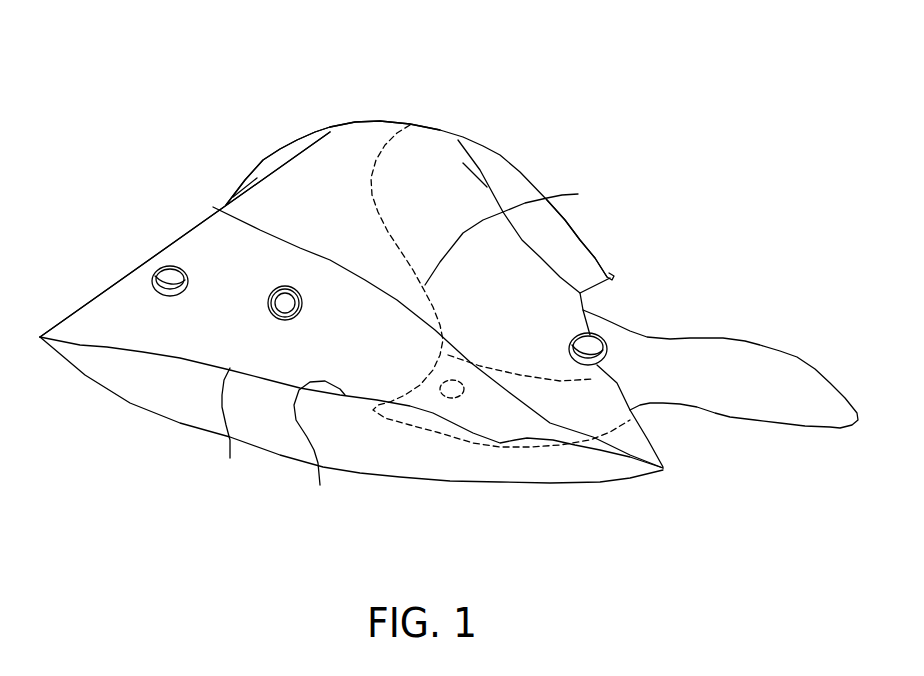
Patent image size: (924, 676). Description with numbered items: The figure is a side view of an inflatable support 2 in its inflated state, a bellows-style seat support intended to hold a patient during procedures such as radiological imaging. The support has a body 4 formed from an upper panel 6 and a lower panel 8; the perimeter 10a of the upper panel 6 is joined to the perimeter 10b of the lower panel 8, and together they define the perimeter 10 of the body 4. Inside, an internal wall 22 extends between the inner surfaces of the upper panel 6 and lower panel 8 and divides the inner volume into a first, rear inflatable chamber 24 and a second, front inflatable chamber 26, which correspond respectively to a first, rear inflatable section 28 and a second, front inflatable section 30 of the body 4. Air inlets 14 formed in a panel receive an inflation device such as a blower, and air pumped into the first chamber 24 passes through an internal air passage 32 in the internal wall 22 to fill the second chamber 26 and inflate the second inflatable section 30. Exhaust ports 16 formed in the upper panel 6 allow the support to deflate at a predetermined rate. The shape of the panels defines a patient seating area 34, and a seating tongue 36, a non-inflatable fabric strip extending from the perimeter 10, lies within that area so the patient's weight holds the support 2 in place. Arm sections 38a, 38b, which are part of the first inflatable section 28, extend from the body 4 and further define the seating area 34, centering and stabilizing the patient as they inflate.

The inflatable support 2 is at (556, 88).
The body 4 is at (190, 260).
The upper panel 6 is at (102, 310).
The lower panel 8 is at (148, 393).
The perimeter 10 is at (145, 352).
The perimeter of the upper panel 10a is at (319, 446).
The perimeter of the lower panel 10b is at (232, 426).
The air inlet 14 is at (277, 287).
The exhaust port 16 is at (153, 269).
The internal wall 22 is at (515, 234).
The first inflatable chamber 24 is at (316, 170).
The second inflatable chamber 26 is at (438, 155).
The first inflatable section 28 is at (363, 133).
The second inflatable section 30 is at (500, 176).
The internal air passage 32 is at (445, 398).
The patient seating area 34 is at (620, 303).
The seating tongue 36 is at (723, 348).
The arm section 38a is at (655, 461).
The arm section 38b is at (580, 261).